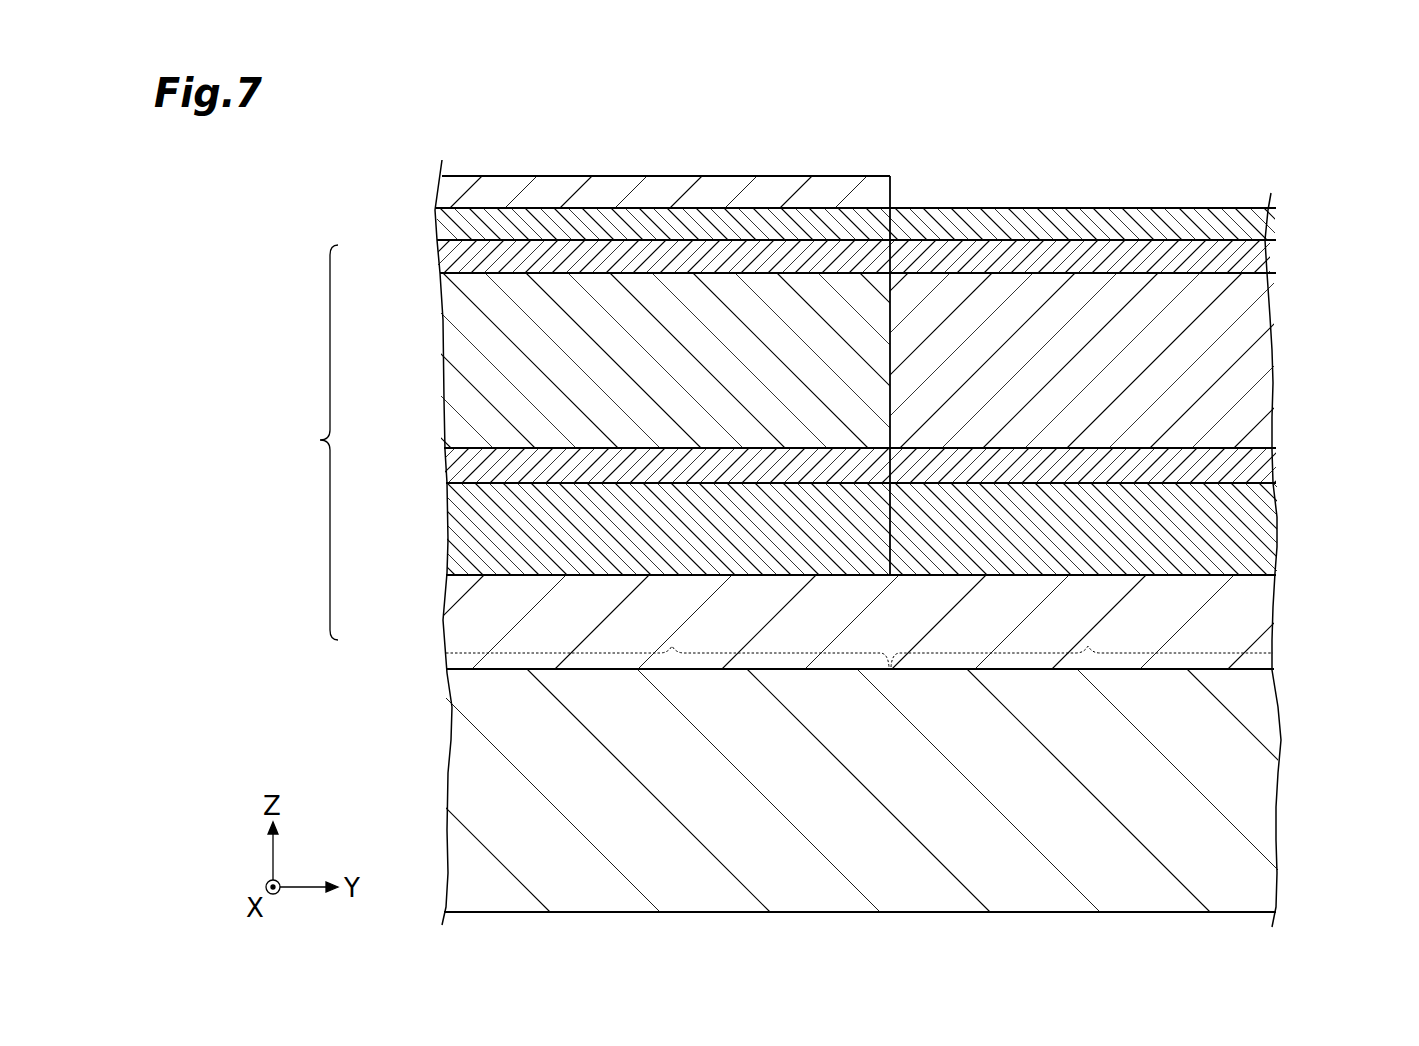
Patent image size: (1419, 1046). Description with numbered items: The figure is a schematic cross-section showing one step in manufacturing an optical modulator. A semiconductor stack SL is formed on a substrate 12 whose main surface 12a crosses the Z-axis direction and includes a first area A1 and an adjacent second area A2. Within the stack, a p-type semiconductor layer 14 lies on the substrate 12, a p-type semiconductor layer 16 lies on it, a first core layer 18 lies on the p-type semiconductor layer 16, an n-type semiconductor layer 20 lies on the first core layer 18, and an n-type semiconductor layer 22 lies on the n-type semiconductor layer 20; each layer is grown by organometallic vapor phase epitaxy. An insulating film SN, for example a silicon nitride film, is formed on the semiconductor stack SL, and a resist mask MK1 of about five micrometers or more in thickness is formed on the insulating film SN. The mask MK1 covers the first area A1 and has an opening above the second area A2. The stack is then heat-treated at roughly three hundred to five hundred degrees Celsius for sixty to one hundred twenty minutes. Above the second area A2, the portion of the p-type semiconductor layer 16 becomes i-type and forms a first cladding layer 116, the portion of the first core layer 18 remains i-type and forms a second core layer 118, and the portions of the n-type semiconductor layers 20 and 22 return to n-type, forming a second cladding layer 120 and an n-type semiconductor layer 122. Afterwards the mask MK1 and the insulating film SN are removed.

The mask MK1 is at (478, 184).
The insulating film SN is at (478, 218).
The n-type semiconductor layer 22 is at (478, 258).
The n-type semiconductor layer 122 is at (1225, 257).
The n-type semiconductor layer 20 is at (478, 363).
The second cladding layer 120 is at (1223, 357).
The first core layer 18 is at (478, 461).
The second core layer 118 is at (1223, 466).
The p-type semiconductor layer 16 is at (478, 523).
The first cladding layer 116 is at (1223, 523).
The p-type semiconductor layer 14 is at (478, 612).
The substrate 12 is at (1225, 783).
The main surface 12a is at (1207, 668).
The first area A1 is at (667, 641).
The second area A2 is at (1082, 641).
The semiconductor stack SL is at (312, 442).